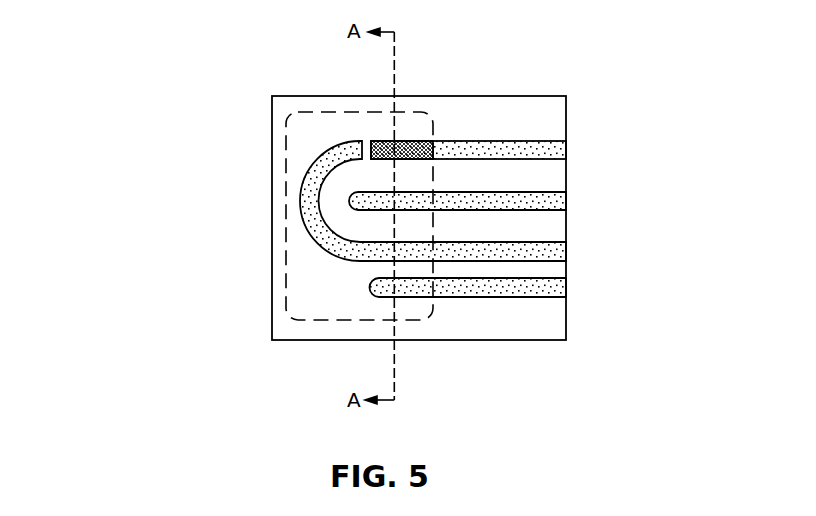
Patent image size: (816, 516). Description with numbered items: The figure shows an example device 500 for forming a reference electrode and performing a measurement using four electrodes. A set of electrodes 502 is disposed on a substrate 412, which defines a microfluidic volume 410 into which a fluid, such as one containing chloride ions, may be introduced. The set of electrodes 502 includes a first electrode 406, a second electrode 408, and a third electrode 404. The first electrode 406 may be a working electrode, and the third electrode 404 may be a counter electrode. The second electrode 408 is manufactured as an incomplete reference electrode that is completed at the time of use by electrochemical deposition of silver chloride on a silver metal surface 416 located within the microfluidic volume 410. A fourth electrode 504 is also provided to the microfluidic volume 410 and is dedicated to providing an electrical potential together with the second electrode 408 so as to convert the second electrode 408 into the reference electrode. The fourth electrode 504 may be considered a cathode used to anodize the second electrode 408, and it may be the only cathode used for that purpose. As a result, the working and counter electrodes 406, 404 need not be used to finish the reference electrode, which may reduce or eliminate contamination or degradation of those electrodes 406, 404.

The device 500 is at (156, 97).
The set of electrodes 502 is at (658, 384).
The third electrode 404 is at (306, 207).
The first electrode 406 is at (515, 203).
The second electrode 408 is at (455, 150).
The microfluidic volume 410 is at (335, 320).
The substrate 412 is at (276, 278).
The silver metal surface 416 is at (383, 146).
The fourth electrode 504 is at (453, 288).